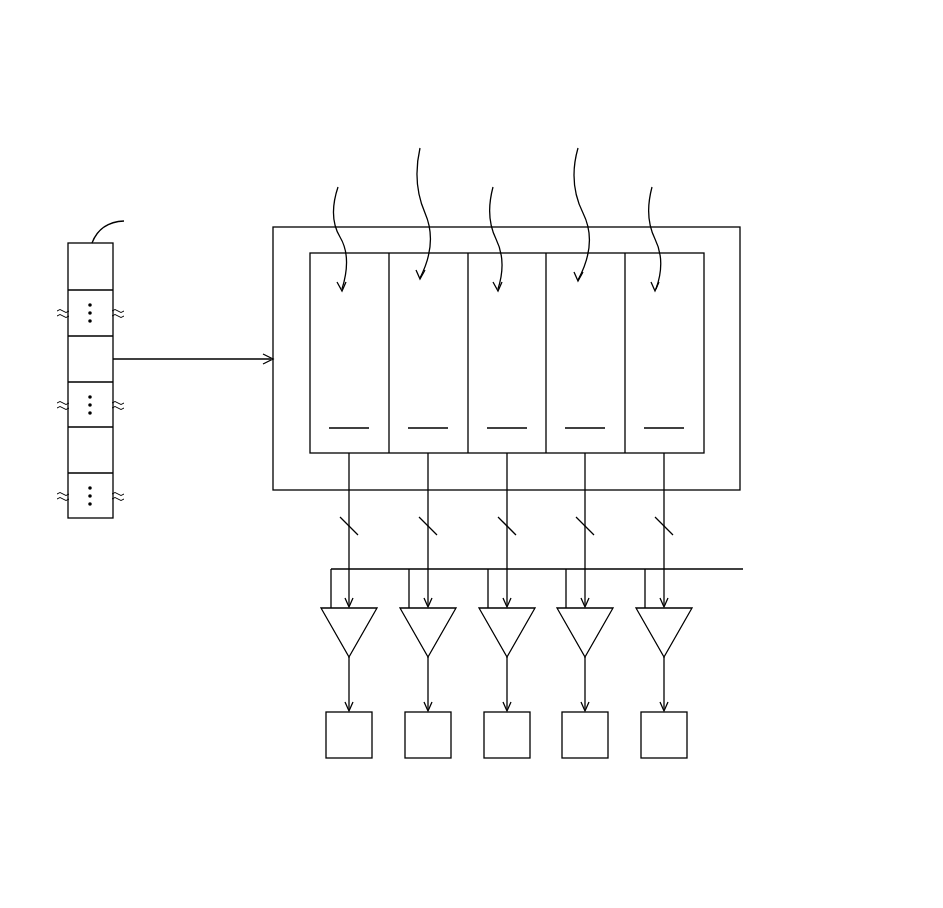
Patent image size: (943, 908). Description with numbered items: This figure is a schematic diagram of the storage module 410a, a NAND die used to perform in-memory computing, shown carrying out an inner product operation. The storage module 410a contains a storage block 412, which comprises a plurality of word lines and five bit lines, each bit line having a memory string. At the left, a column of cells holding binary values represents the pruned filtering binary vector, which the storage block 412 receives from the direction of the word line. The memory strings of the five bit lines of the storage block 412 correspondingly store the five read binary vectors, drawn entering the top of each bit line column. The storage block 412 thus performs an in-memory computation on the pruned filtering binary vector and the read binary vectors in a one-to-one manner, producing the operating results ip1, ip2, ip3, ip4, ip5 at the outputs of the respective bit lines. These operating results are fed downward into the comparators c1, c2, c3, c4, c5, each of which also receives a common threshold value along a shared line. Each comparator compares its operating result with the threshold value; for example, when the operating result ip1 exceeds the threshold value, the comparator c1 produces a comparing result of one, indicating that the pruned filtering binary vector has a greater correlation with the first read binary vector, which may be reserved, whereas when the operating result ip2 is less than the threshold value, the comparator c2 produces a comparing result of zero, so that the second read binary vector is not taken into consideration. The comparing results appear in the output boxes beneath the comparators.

The storage module 410a is at (706, 76).
The storage block 412 is at (740, 260).
The operating result ip1 is at (347, 533).
The operating result ip2 is at (426, 533).
The operating result ip3 is at (505, 533).
The operating result ip4 is at (583, 533).
The operating result ip5 is at (662, 533).
The comparator c1 is at (335, 632).
The comparator c2 is at (414, 632).
The comparator c3 is at (493, 632).
The comparator c4 is at (572, 632).
The comparator c5 is at (677, 632).